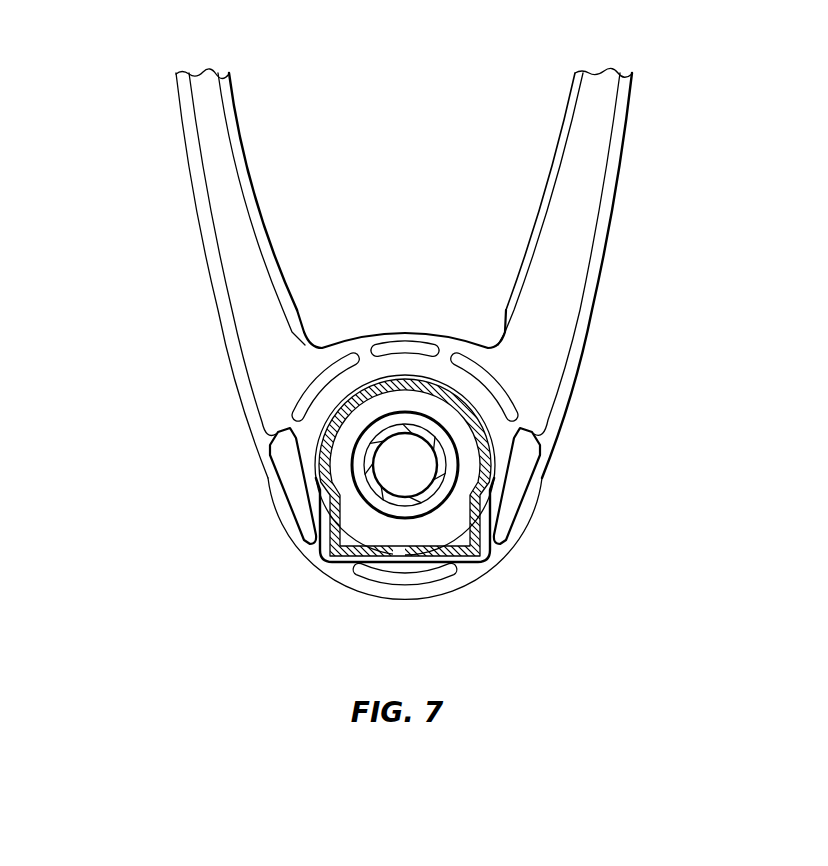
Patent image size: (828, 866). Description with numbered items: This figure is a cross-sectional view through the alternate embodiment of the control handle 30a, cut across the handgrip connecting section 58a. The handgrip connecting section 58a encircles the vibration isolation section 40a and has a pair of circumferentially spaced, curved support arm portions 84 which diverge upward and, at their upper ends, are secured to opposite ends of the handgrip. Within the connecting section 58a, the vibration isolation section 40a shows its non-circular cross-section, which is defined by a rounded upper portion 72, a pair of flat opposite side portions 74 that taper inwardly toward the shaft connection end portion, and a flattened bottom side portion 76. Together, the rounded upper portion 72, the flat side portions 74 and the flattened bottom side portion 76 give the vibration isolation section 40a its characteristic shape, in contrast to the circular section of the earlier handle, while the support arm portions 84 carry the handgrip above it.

The control handle 30a is at (168, 336).
The handgrip connecting section 58a is at (601, 276).
The curved support arm portions 84 is at (191, 219).
The vibration isolation section 40a is at (413, 367).
The rounded upper portion 72 is at (436, 388).
The flat opposite side portions 74 is at (325, 513).
The flattened bottom side portion 76 is at (470, 557).